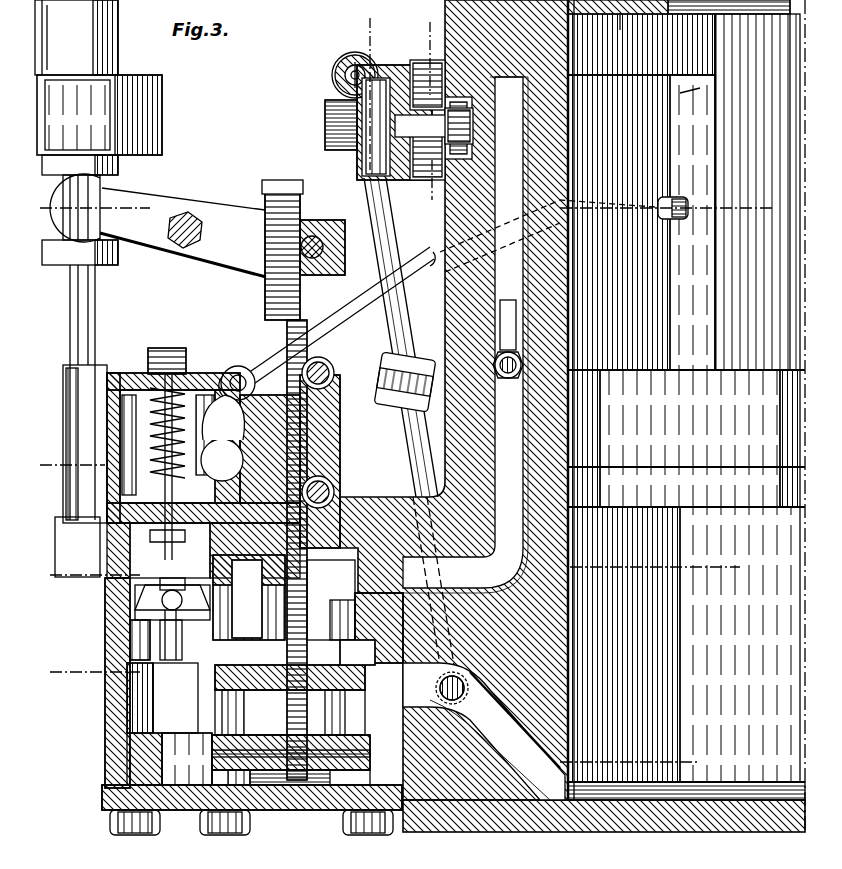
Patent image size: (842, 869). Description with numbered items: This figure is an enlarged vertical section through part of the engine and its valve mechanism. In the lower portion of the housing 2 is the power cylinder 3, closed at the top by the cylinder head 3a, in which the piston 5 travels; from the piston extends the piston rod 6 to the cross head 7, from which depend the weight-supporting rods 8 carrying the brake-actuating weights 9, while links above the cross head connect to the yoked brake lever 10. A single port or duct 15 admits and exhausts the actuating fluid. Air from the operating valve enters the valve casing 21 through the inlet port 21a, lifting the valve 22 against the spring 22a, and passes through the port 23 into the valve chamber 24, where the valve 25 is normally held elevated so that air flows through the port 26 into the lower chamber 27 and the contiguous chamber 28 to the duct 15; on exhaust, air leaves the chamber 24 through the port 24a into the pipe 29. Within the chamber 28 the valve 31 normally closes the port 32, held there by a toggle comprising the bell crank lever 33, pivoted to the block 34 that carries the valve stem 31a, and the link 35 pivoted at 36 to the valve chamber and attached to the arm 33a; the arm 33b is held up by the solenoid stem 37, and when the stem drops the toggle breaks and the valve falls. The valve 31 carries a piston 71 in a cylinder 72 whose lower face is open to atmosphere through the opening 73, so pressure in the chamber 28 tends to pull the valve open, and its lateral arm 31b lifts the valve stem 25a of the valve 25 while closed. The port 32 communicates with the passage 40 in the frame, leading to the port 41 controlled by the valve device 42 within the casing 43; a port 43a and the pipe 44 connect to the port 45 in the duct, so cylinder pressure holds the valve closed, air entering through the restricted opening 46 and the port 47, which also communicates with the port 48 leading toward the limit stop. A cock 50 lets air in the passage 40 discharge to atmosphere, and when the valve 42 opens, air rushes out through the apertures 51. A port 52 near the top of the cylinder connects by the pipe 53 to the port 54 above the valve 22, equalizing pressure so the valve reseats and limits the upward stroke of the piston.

The housing 2 is at (470, 425).
The power cylinder 3 is at (686, 416).
The cylinder head 3a is at (616, 30).
The piston 5 is at (678, 383).
The piston rod 6 is at (332, 465).
The cross head 7 is at (403, 572).
The weight-supporting rods 8 is at (382, 718).
The brake-actuating weights 9 is at (351, 103).
The yoked brake lever 10 is at (432, 115).
The port or duct 15 is at (484, 731).
The valve casing 21 is at (228, 438).
The inlet port 21a is at (225, 490).
The valve 22 is at (150, 448).
The spring 22a is at (150, 370).
The port 23 is at (100, 510).
The valve chamber 24 is at (150, 604).
The port 24a is at (185, 545).
The valve 25 is at (160, 585).
The valve stem 25a is at (172, 648).
The port 26 is at (140, 632).
The lower chamber 27 is at (127, 693).
The chamber 28 is at (360, 720).
The pipe 29 is at (190, 605).
The valve 31 is at (356, 680).
The valve stem 31a is at (282, 185).
The arm 31b is at (175, 690).
The port 32 is at (340, 630).
The bell crank lever 33 is at (233, 258).
The arm 33a is at (330, 350).
The arm 33b is at (140, 202).
The block 34 is at (350, 258).
The link 35 is at (333, 420).
The pivot 36 is at (333, 487).
The solenoid stem 37 is at (118, 52).
The passage 40 is at (520, 568).
The port 41 is at (472, 118).
The valve device 42 is at (402, 180).
The casing 43 is at (393, 66).
The port 43a is at (350, 62).
The pipe 44 is at (392, 268).
The port 45 is at (460, 700).
The restricted opening 46 is at (335, 64).
The port 47 is at (340, 93).
The port 48 is at (358, 65).
The cock 50 is at (506, 378).
The apertures 51 is at (427, 62).
The port 52 is at (660, 219).
The pipe 53 is at (487, 252).
The port 54 is at (262, 383).
The piston 71 is at (228, 835).
The cylinder 72 is at (245, 835).
The opening 73 is at (272, 815).